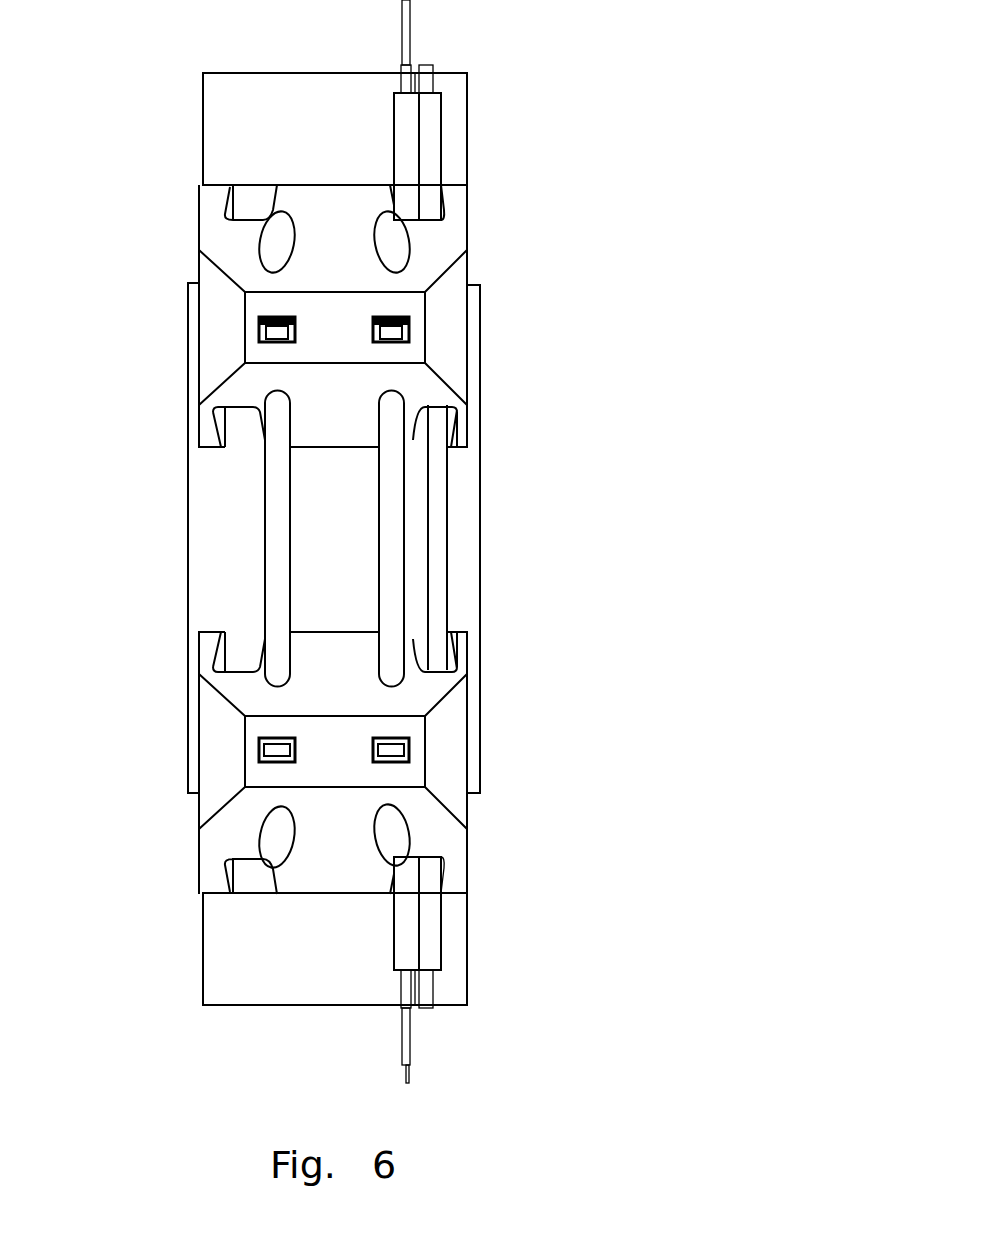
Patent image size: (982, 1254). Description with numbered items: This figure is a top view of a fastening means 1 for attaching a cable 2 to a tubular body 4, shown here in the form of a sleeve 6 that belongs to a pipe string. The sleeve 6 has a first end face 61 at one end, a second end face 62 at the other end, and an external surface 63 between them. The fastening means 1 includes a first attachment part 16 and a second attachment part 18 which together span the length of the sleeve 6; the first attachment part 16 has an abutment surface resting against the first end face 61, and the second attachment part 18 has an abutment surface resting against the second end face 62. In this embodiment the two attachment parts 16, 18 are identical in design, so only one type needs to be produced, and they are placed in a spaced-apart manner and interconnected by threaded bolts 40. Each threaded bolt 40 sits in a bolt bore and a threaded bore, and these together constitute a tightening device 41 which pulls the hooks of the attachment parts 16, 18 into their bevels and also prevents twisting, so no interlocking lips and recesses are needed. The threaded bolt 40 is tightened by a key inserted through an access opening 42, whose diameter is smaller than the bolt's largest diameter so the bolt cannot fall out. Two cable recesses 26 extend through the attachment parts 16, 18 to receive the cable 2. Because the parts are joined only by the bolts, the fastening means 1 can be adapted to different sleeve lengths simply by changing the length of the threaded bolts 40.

The fastening means 1 is at (560, 287).
The cable 2 is at (417, 945).
The tubular body 4 is at (467, 109).
The sleeve 6 is at (482, 520).
The first attachment part 16 is at (447, 759).
The second attachment part 18 is at (458, 332).
The cable recess 26 is at (432, 875).
The threaded bolt 40 is at (389, 603).
The tightening device 41 is at (404, 495).
The access opening 42 is at (400, 817).
The first end face 61 is at (473, 795).
The second end face 62 is at (473, 283).
The external surface 63 is at (230, 543).